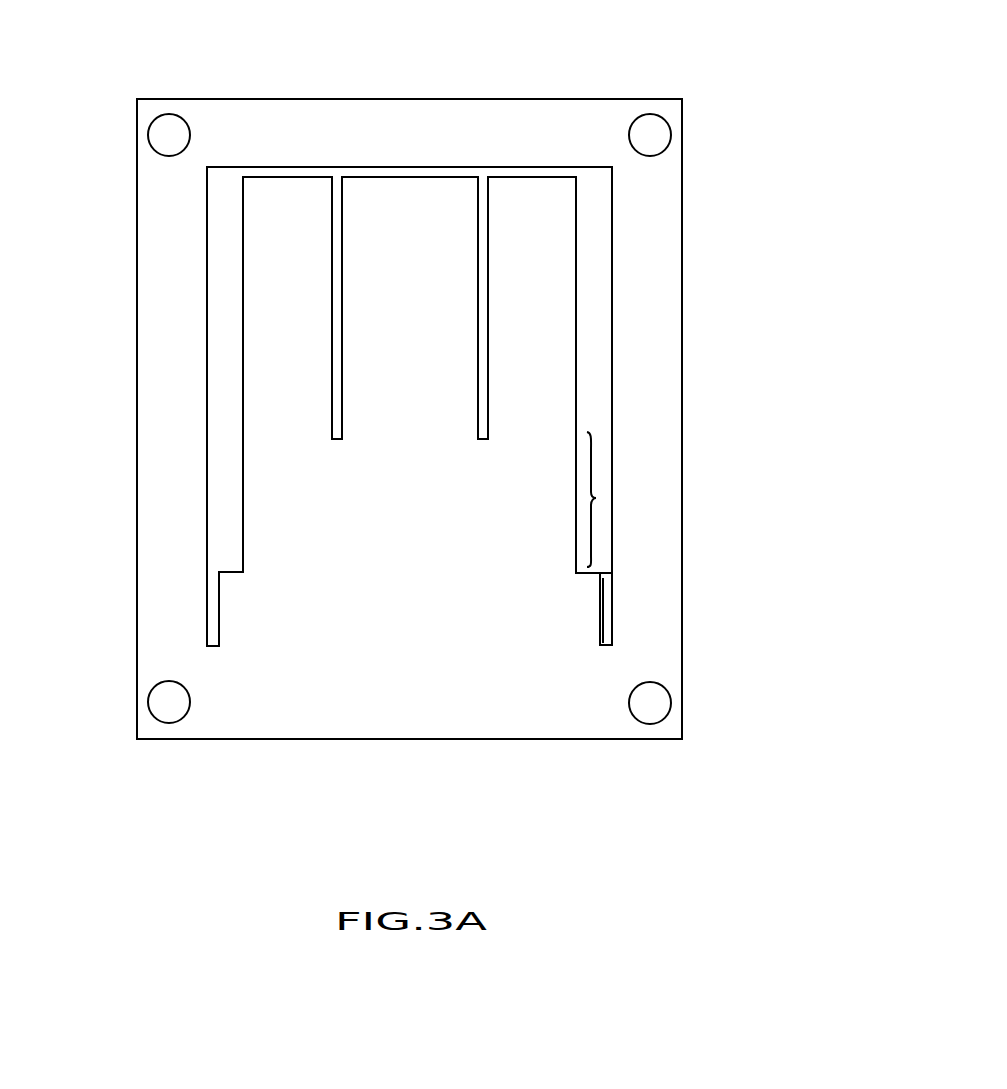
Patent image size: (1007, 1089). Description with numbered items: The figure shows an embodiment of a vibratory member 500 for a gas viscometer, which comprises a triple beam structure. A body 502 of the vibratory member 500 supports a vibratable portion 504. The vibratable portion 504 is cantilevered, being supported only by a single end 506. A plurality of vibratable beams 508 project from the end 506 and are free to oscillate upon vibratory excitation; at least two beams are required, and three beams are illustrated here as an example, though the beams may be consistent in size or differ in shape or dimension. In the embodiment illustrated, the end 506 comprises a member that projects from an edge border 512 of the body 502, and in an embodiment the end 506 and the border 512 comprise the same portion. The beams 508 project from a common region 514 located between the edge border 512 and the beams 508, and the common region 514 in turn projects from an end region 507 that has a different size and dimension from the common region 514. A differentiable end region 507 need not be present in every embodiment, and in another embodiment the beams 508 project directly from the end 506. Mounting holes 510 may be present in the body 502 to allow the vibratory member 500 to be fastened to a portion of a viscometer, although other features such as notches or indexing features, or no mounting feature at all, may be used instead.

The vibratory member 500 is at (760, 148).
The body 502 is at (683, 541).
The vibratable portion 504 is at (579, 288).
The end 506 is at (548, 623).
The end region 507 is at (606, 609).
The vibratable beams 508 is at (282, 203).
The mounting holes 510 is at (169, 135).
The edge border 512 is at (258, 115).
The common region 514 is at (596, 498).